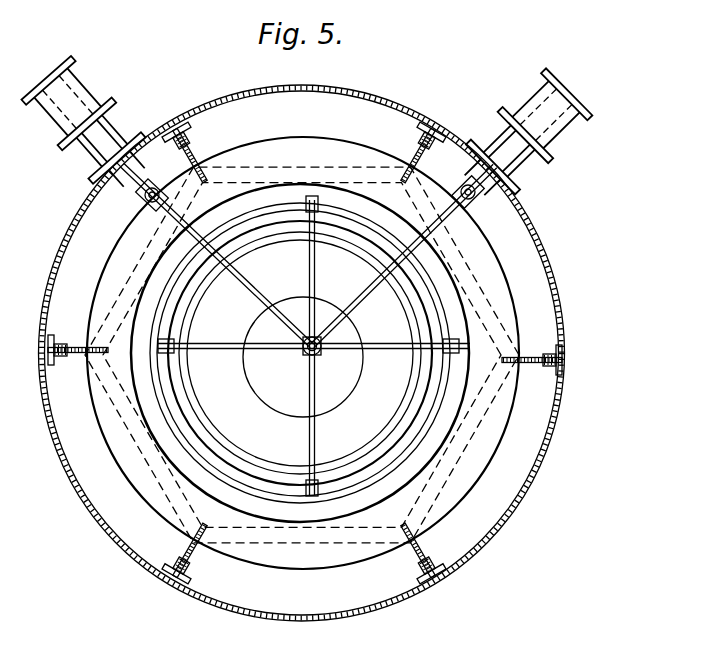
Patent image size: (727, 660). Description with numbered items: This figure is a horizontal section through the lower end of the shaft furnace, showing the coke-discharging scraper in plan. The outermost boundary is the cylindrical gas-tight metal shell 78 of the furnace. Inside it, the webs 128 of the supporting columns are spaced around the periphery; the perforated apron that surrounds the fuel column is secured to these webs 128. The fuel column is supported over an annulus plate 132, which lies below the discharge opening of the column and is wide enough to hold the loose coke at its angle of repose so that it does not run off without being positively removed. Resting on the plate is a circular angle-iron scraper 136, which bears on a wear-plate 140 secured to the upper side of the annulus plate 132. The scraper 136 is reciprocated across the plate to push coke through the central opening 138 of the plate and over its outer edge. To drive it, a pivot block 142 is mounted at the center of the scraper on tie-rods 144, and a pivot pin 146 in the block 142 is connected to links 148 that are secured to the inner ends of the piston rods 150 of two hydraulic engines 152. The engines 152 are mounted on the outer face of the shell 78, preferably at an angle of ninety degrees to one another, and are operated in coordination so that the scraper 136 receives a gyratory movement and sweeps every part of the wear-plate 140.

The metal shell 78 is at (562, 450).
The webs 128 is at (530, 367).
The annulus plate 132 is at (482, 472).
The scraper 136 is at (173, 276).
The central opening 138 is at (262, 400).
The wear-plate 140 is at (419, 315).
The pivot block 142 is at (321, 356).
The tie-rods 144 is at (313, 265).
The pivot pin 146 is at (302, 357).
The links 148 is at (452, 210).
The piston rods 150 is at (156, 185).
The hydraulic engines 152 is at (78, 82).